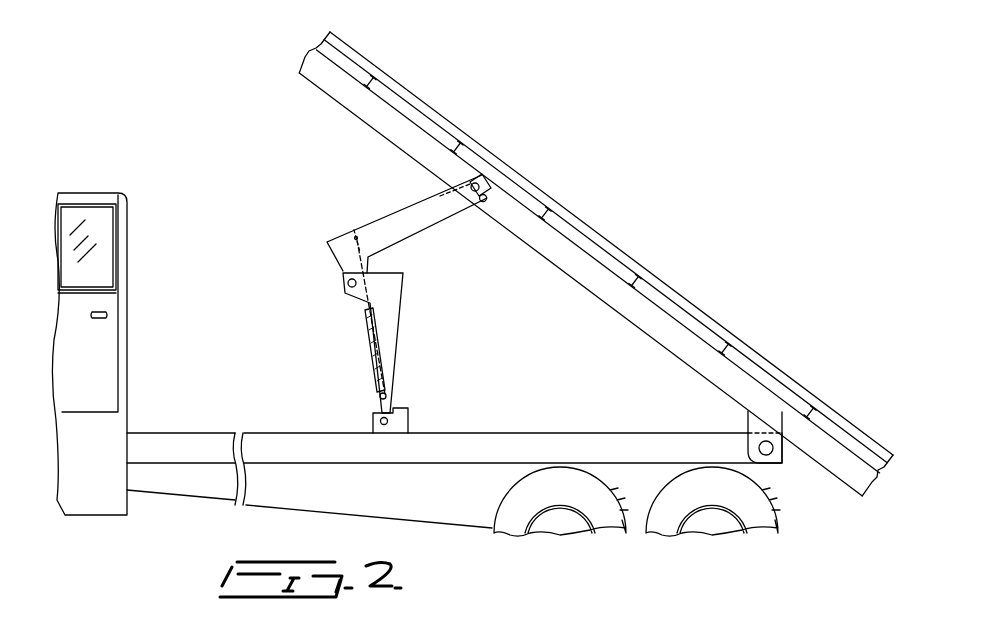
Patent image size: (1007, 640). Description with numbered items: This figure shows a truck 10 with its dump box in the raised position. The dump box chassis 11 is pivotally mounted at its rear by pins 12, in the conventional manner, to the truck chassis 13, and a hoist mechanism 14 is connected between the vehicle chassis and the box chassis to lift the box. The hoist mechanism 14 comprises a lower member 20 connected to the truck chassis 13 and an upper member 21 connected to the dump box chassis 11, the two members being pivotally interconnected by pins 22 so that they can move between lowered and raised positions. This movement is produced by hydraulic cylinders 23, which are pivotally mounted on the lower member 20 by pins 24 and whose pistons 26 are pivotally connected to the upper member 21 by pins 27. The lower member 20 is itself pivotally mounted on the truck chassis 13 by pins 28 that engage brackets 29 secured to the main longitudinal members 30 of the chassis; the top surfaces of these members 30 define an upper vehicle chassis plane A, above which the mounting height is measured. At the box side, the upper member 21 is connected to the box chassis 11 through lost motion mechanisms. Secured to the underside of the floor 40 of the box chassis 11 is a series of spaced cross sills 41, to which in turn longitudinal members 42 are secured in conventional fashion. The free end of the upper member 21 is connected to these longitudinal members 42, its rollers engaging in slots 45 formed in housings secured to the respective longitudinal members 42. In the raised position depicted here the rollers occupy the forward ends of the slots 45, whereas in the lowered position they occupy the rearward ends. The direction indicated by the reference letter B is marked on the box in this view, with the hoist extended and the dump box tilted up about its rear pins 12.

The truck 10 is at (140, 281).
The dump box chassis 11 is at (596, 264).
The pins 12 is at (769, 456).
The truck chassis 13 is at (587, 450).
The hoist mechanism 14 is at (431, 329).
The lower member 20 is at (371, 326).
The upper member 21 is at (457, 213).
The pins 22 is at (348, 285).
The hydraulic cylinders 23 is at (368, 337).
The pins 24 is at (385, 398).
The pistons 26 is at (361, 308).
The pins 27 is at (357, 238).
The pins 28 is at (383, 426).
The brackets 29 is at (402, 432).
The main longitudinal members 30 is at (178, 450).
The floor 40 is at (583, 224).
The cross sills 41 is at (722, 347).
The longitudinal members 42 is at (675, 344).
The slots 45 is at (490, 195).
The upper vehicle chassis plane A is at (513, 437).
The direction B is at (588, 240).